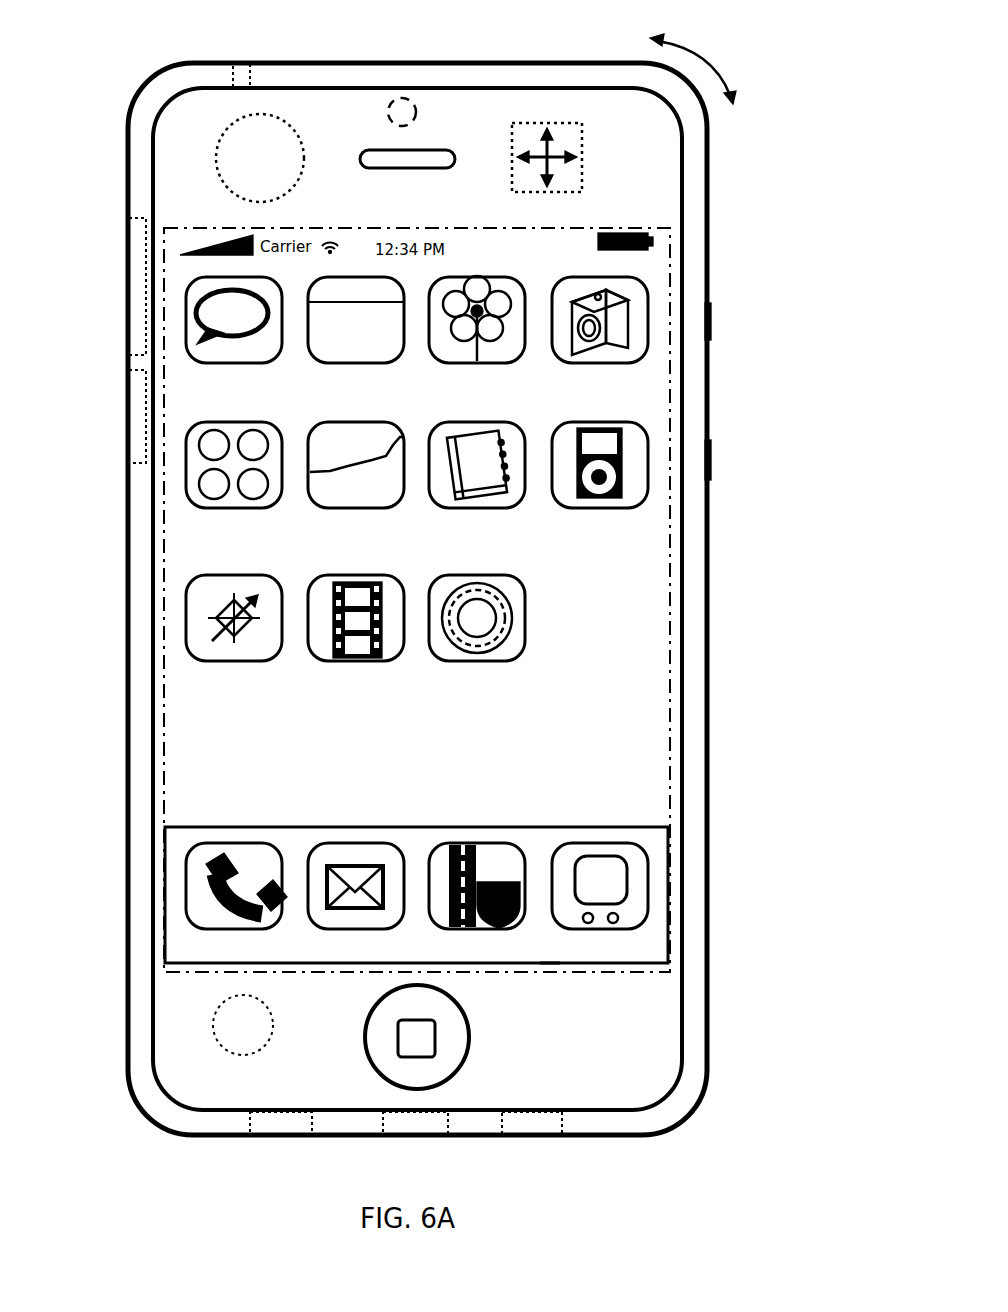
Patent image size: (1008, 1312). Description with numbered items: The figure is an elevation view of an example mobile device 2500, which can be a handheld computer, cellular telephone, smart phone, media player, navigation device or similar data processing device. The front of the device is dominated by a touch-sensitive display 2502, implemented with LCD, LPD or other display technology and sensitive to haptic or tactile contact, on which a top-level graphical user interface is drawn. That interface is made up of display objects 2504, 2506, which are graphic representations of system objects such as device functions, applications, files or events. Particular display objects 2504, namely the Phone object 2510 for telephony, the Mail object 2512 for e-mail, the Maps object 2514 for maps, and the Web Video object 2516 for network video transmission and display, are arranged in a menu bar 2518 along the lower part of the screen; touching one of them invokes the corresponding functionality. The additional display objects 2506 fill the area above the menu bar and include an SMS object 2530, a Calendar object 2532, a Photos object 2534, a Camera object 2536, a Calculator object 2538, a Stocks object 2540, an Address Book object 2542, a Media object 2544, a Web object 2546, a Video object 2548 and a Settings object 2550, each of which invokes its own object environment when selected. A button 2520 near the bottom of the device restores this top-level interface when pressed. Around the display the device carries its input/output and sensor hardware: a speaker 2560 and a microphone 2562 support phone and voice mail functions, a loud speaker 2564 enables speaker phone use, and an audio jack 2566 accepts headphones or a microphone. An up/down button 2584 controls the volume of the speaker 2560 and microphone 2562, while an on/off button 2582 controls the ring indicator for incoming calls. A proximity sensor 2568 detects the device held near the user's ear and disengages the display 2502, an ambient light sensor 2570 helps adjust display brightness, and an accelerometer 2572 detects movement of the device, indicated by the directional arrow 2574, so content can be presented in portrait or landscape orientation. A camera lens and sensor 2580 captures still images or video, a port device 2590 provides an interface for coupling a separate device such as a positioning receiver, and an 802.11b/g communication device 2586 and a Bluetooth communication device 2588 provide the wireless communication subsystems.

The mobile device 2500 is at (500, 63).
The touch-sensitive display 2502 is at (610, 228).
The display objects 2504 is at (660, 838).
The display objects 2506 is at (660, 270).
The Phone object 2510 is at (235, 843).
The Mail object 2512 is at (357, 843).
The Maps object 2514 is at (493, 843).
The Web Video object 2516 is at (600, 843).
The menu bar 2518 is at (555, 965).
The button 2520 is at (470, 1035).
The short messaging service (SMS) object 2530 is at (282, 363).
The Calendar object 2532 is at (404, 363).
The Photos object 2534 is at (525, 363).
The Camera object 2536 is at (648, 363).
The Calculator object 2538 is at (282, 508).
The Stocks object 2540 is at (404, 508).
The Address Book object 2542 is at (525, 508).
The Media object 2544 is at (648, 508).
The Web object 2546 is at (282, 661).
The Video object 2548 is at (404, 661).
The Settings object 2550 is at (525, 661).
The speaker 2560 is at (390, 168).
The microphone 2562 is at (312, 1125).
The loud speaker 2564 is at (562, 1125).
The audio jack 2566 is at (250, 72).
The proximity sensor 2568 is at (304, 160).
The ambient light sensor 2570 is at (265, 1048).
The accelerometer 2572 is at (582, 160).
The directional arrow 2574 is at (726, 58).
The camera lens and sensor 2580 is at (416, 112).
The on/off button 2582 is at (711, 320).
The up/down button 2584 is at (711, 458).
The 802.11b/g communication device 2586 is at (140, 218).
The Bluetooth communication device 2588 is at (140, 370).
The port device 2590 is at (448, 1125).